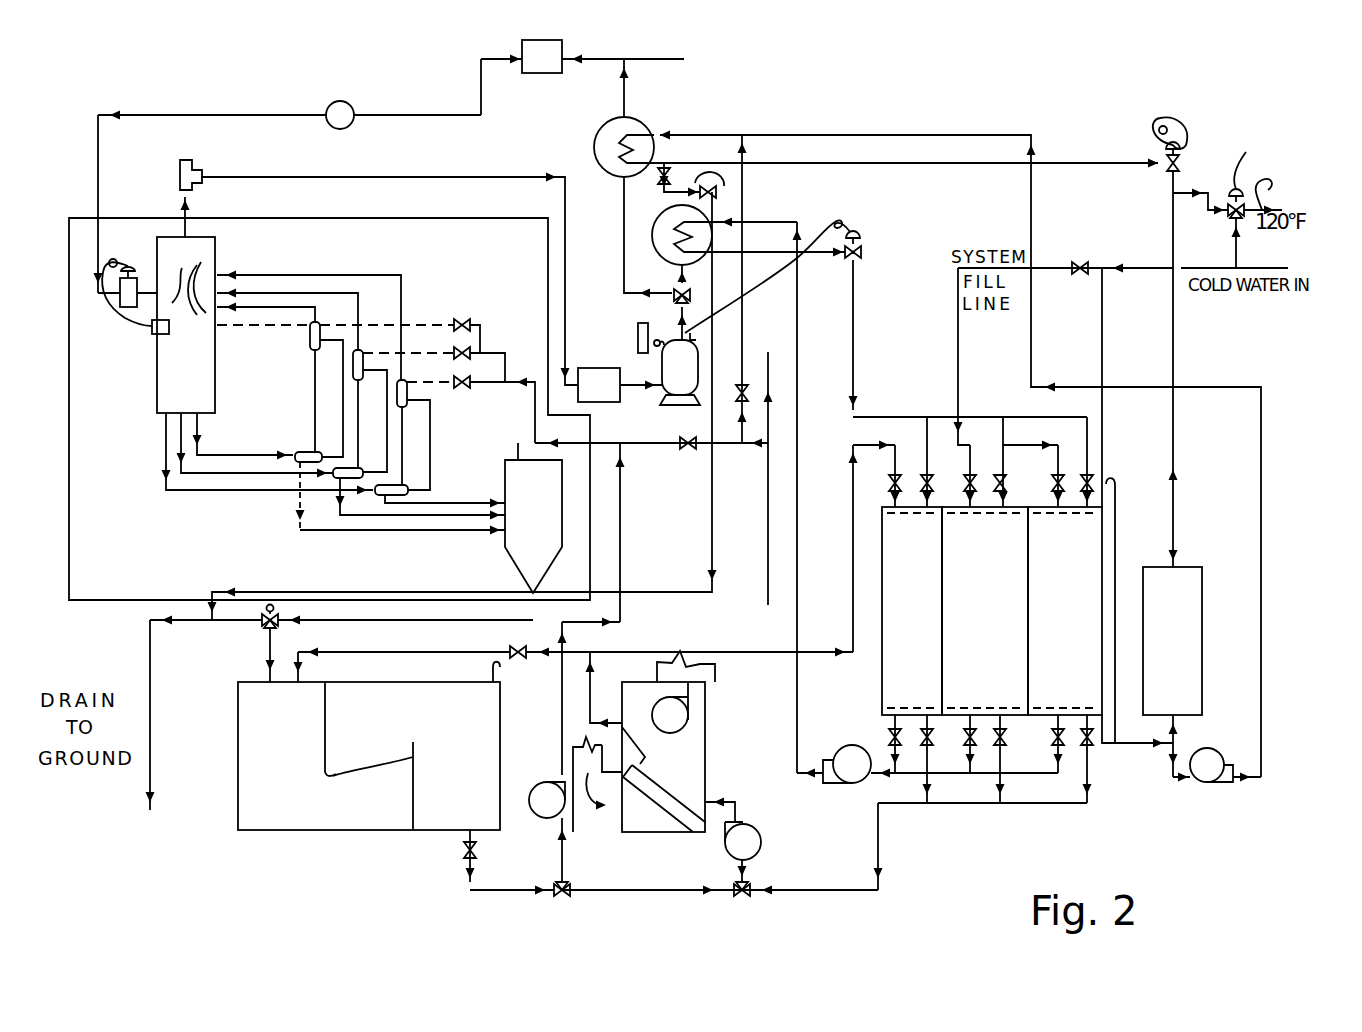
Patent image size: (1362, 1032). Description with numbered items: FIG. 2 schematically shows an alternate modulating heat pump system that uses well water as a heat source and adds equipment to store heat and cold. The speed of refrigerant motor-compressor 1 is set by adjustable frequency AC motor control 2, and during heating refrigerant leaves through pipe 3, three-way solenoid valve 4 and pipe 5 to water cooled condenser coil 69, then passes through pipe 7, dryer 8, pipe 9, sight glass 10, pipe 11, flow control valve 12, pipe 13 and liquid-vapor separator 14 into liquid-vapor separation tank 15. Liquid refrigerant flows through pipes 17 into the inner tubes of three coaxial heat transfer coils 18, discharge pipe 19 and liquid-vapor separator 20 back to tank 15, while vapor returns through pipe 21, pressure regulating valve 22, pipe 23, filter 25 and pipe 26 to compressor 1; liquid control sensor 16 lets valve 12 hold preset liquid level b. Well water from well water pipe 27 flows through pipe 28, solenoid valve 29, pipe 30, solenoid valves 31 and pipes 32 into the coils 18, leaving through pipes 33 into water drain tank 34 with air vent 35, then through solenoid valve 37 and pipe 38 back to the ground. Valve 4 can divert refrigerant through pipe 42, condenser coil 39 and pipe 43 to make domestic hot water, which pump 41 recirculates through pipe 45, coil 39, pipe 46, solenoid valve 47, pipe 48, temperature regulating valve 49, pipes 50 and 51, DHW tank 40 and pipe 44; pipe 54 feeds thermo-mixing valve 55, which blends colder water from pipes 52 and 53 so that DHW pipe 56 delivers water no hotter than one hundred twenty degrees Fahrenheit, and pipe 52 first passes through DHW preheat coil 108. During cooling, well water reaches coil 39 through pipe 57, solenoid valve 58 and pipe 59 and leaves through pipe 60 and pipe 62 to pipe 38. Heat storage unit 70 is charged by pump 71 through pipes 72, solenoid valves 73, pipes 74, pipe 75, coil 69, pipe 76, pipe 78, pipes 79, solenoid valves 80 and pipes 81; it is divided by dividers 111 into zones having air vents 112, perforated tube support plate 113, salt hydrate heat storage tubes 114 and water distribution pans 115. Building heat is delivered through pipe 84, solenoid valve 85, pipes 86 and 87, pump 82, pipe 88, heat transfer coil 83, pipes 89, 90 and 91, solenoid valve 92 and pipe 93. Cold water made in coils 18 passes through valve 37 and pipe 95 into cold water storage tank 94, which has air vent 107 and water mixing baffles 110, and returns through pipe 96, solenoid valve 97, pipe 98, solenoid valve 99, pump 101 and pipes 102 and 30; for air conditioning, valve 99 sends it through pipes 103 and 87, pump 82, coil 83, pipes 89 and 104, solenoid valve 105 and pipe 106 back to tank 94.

The refrigerant motor-compressor 1 is at (696, 340).
The adjustable frequency AC motor control 2 is at (637, 329).
The pipe 3 is at (678, 323).
The three-way solenoid valve 4 is at (694, 283).
The pipe 5 is at (678, 283).
The pipe 7 is at (591, 59).
The dryer 8 is at (528, 40).
The pipe 9 is at (462, 87).
The sight glass 10 is at (345, 103).
The pipe 11 is at (240, 114).
The flow control valve 12 is at (128, 266).
The pipe 13 is at (142, 284).
The liquid-vapor separator 14 is at (178, 273).
The liquid-vapor separation tank 15 is at (216, 357).
The liquid control sensor 16 is at (152, 334).
The pipes 17 is at (268, 462).
The coaxial heat transfer coils 18 is at (400, 433).
The discharge pipe 19 is at (306, 309).
The liquid-vapor separator 20 is at (204, 275).
The pipe 21 is at (190, 212).
The pressure regulating valve 22 is at (192, 161).
The pipe 23 is at (336, 177).
The filter 25 is at (604, 368).
The pipe 26 is at (641, 375).
The well water pipe 27 is at (766, 578).
The pipe 28 is at (760, 452).
The solenoid valve 29 is at (686, 452).
The pipe 30 is at (632, 439).
The solenoid valves 31 is at (486, 385).
The pipes 32 is at (458, 380).
The pipes 33 is at (456, 530).
The water drain tank 34 is at (487, 565).
The air vent 35 is at (518, 458).
The solenoid valve 37 is at (282, 611).
The pipe 38 is at (148, 653).
The condenser coil 39 is at (606, 176).
The DHW tank 40 is at (1200, 612).
The pump 41 is at (1212, 783).
The pipe 42 is at (624, 285).
The pipe 43 is at (624, 94).
The pipe 44 is at (1172, 762).
The pipe 45 is at (768, 133).
The pipe 46 is at (665, 183).
The solenoid valve 47 is at (674, 165).
The pipe 48 is at (765, 150).
The temperature regulating valve 49 is at (1178, 146).
The pipe 50 is at (1171, 183).
The pipe 51 is at (1172, 314).
The pipe 52 is at (1226, 264).
The pipe 53 is at (1233, 244).
The pipe 54 is at (1190, 188).
The thermo-mixing valve 55 is at (1252, 163).
The DHW pipe 56 is at (1264, 208).
The pipe 57 is at (741, 428).
The solenoid valve 58 is at (736, 392).
The pipe 59 is at (767, 276).
The pipe 60 is at (706, 730).
The pipe 62 is at (242, 592).
The water cooled condenser coil 69 is at (660, 249).
The heat storage unit 70 is at (880, 712).
The pump 71 is at (893, 722).
The pipes 72 is at (845, 745).
The solenoid valves 73 is at (960, 746).
The pipes 74 is at (900, 752).
The pipe 75 is at (798, 708).
The pipe 76 is at (784, 254).
The pipe 78 is at (860, 326).
The pipes 79 is at (861, 243).
The solenoid valves 80 is at (1107, 462).
The pipes 81 is at (1011, 493).
The pump 82 is at (761, 830).
The heat transfer coil 83 is at (682, 797).
The pipe 84 is at (996, 759).
The solenoid valve 85 is at (1094, 760).
The pipes 86 is at (918, 790).
The pipes 87 is at (748, 874).
The pipe 88 is at (735, 800).
The pipes 89 is at (606, 714).
The pipes 90 is at (740, 652).
The pipes 91 is at (955, 367).
The solenoid valve 92 is at (997, 462).
The pipe 93 is at (960, 476).
The cold water storage tank 94 is at (237, 748).
The pipe 95 is at (270, 669).
The pipe 96 is at (466, 836).
The solenoid valve 97 is at (478, 851).
The pipe 98 is at (522, 892).
The solenoid valve 99 is at (563, 898).
The pump 101 is at (545, 783).
The pipes 102 is at (558, 716).
The pipes 103 is at (676, 888).
The pipes 104 is at (570, 628).
The solenoid valve 105 is at (510, 650).
The pipe 106 is at (416, 652).
The air vent 107 is at (490, 668).
The DHW preheat coil 108 is at (1102, 645).
The water mixing baffles 110 is at (334, 766).
The dividers 111 is at (1026, 600).
The air vents 112 is at (1116, 488).
The perforated tube support plate 113 is at (1049, 702).
The heat storage tubes 114 is at (912, 611).
The water distribution pans 115 is at (1086, 533).
The preset liquid level b is at (335, 348).